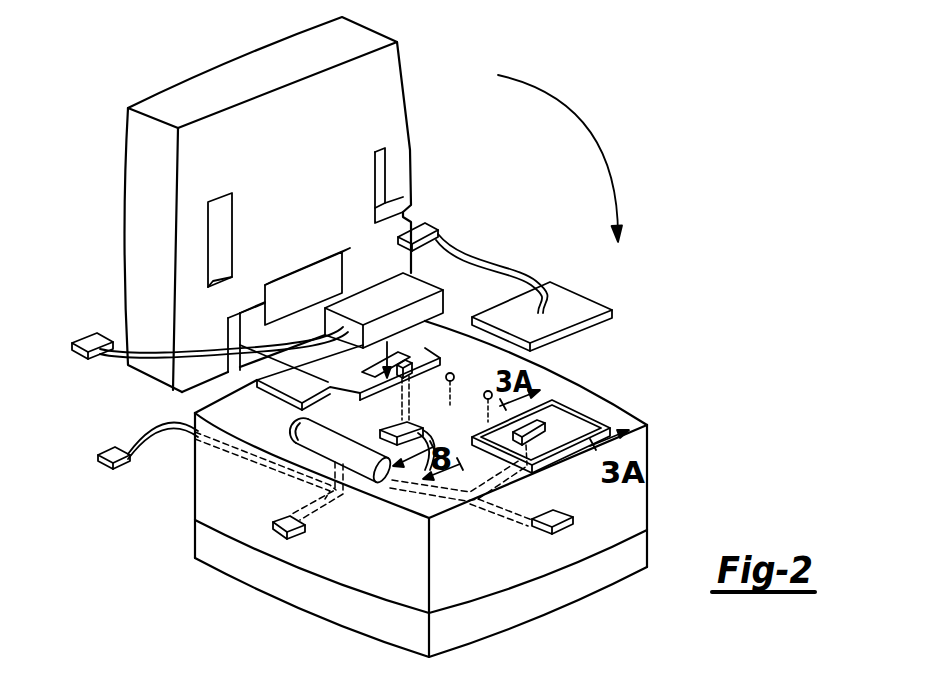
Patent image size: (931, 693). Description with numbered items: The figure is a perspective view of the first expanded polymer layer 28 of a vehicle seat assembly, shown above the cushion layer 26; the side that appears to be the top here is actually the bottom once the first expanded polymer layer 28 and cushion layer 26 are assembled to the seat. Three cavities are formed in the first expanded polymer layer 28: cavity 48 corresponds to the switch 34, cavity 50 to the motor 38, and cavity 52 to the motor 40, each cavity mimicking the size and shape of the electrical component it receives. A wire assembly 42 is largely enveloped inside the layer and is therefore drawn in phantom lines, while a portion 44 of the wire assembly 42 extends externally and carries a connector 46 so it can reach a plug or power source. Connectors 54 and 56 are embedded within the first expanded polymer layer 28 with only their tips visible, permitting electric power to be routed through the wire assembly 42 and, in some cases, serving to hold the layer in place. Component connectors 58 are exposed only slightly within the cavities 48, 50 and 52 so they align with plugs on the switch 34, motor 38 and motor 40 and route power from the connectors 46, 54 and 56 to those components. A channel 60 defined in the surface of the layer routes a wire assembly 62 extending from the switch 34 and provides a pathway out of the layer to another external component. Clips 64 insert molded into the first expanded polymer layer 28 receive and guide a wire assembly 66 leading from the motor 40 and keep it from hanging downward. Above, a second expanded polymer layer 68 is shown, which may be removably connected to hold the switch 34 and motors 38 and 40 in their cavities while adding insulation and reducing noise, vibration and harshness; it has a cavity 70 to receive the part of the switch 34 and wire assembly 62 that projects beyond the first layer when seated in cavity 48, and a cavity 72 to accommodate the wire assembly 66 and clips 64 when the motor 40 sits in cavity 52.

The cushion layer 26 is at (580, 580).
The first expanded polymer layer 28 is at (636, 399).
The switch 34 is at (376, 300).
The motor 38 is at (344, 442).
The motor 40 is at (578, 303).
The wire assembly 42 is at (355, 517).
The portion of wire assembly 44 is at (168, 438).
The connector 46 is at (105, 447).
The cavity 48 is at (381, 372).
The cavity 50 is at (300, 428).
The cavity 52 is at (570, 427).
The connector 54 is at (275, 530).
The connector 56 is at (576, 522).
The component connector 58 is at (413, 362).
The channel 60 is at (283, 400).
The wire assembly 62 is at (112, 358).
The clips 64 is at (490, 392).
The wire assembly 66 is at (475, 258).
The second expanded polymer layer 68 is at (237, 72).
The cavity 70 is at (305, 280).
The cavity 72 is at (393, 188).